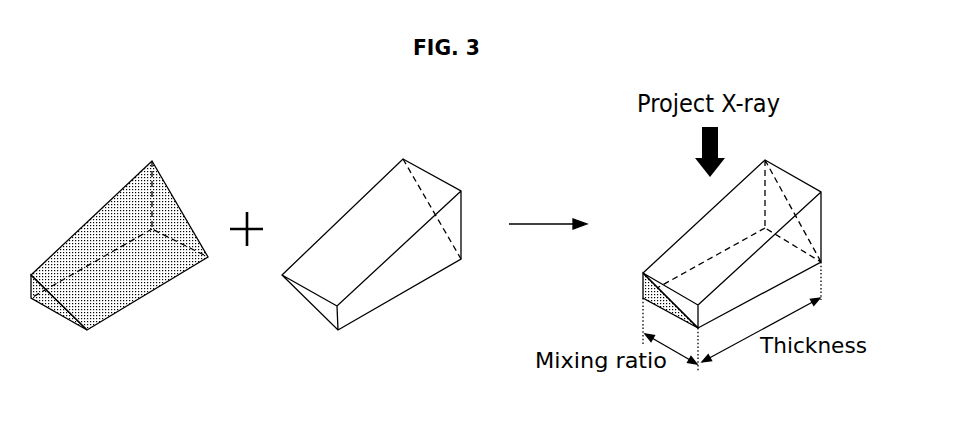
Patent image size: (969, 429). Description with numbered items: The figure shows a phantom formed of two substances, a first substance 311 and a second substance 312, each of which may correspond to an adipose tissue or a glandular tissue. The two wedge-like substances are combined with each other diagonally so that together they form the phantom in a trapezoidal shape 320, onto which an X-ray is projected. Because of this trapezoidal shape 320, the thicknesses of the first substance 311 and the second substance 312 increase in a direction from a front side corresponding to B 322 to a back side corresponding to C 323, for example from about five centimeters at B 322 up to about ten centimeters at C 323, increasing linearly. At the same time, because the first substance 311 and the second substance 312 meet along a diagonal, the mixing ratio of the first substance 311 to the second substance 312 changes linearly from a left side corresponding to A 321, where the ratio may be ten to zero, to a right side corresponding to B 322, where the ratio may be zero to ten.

The first substance 311 is at (47, 307).
The second substance 312 is at (367, 313).
The trapezoidal shape 320 is at (792, 173).
The A 321 is at (612, 288).
The B 322 is at (725, 340).
The C 323 is at (838, 250).